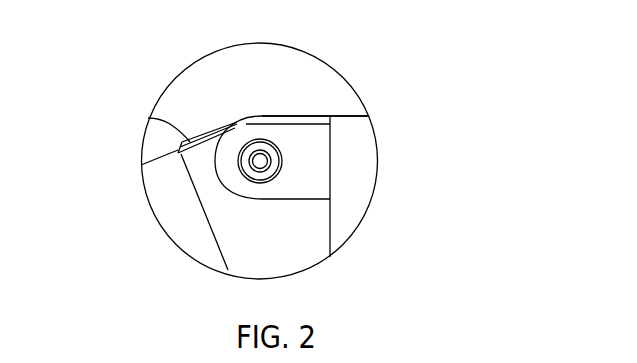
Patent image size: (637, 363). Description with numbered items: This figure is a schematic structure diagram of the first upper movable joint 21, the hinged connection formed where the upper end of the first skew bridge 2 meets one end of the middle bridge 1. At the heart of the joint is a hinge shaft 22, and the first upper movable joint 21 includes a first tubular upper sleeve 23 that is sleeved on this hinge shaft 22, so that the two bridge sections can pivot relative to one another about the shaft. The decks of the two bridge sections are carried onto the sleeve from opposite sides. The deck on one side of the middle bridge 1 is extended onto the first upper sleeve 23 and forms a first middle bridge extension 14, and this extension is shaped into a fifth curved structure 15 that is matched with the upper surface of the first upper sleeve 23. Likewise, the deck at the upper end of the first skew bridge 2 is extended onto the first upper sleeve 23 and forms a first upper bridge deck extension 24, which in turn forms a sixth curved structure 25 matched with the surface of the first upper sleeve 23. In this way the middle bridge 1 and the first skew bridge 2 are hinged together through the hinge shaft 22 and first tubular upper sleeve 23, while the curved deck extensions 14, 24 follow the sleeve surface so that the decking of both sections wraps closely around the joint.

The middle bridge 1 is at (353, 167).
The first skew bridge 2 is at (177, 215).
The first middle bridge extension 14 is at (303, 117).
The fifth curved structure 15 is at (278, 117).
The first upper movable joint 21 is at (298, 173).
The hinge shaft 22 is at (261, 165).
The first tubular upper sleeve 23 is at (255, 117).
The first upper bridge deck extension 24 is at (148, 118).
The sixth curved structure 25 is at (230, 124).